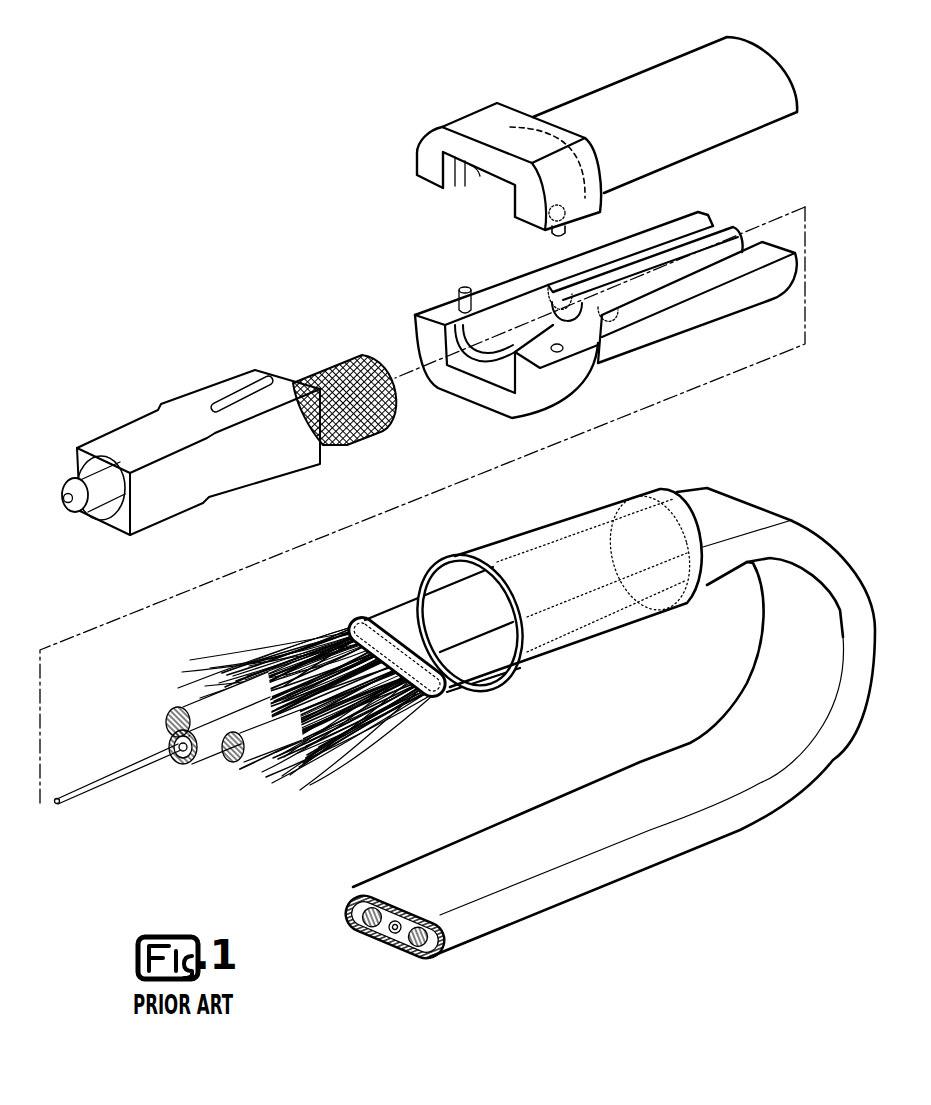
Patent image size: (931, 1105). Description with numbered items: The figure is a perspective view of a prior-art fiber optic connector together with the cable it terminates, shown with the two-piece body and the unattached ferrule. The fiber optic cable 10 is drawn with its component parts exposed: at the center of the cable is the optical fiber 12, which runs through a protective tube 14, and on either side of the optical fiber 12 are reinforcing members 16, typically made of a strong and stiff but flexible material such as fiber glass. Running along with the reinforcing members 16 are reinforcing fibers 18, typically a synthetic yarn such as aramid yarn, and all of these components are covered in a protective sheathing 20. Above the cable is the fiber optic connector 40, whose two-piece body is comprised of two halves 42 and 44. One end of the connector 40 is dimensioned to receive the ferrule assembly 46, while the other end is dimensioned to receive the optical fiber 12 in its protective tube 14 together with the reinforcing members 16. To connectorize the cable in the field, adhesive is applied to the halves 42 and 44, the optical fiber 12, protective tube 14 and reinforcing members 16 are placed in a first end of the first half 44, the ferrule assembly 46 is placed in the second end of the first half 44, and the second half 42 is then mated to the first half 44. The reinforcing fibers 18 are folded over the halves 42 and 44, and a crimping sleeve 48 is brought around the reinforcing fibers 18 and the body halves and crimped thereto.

The fiber optic cable 10 is at (614, 924).
The optical fiber 12 is at (113, 772).
The protective tube 14 is at (210, 743).
The reinforcing members 16 is at (250, 737).
The reinforcing fibers 18 is at (398, 703).
The protective sheathing 20 is at (557, 815).
The fiber optic connector 40 is at (551, 80).
The second half of connector body 42 is at (765, 98).
The first half of connector body 44 is at (653, 333).
The ferrule assembly 46 is at (255, 462).
The crimping sleeve 48 is at (560, 523).